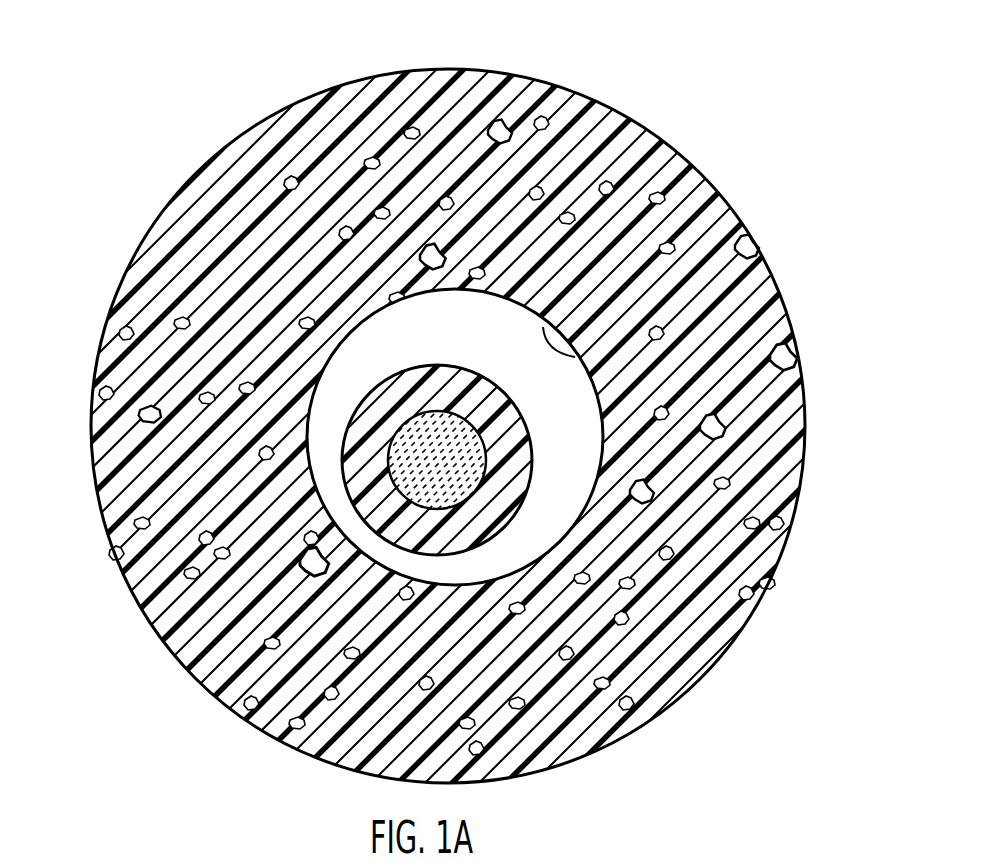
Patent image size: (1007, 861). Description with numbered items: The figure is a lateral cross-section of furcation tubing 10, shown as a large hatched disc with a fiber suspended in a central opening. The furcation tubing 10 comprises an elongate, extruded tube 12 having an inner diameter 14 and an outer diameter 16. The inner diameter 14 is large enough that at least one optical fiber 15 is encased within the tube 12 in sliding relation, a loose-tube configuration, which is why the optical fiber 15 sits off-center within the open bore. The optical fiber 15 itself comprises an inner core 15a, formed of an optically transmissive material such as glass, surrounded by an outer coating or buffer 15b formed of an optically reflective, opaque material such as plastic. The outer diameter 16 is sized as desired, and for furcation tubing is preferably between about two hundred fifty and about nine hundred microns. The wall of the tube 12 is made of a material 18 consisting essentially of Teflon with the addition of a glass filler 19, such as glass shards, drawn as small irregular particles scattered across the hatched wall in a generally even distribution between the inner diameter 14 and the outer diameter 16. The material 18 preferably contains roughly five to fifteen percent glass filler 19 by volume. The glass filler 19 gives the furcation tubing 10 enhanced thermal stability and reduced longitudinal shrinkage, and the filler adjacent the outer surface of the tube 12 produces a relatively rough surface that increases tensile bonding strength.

The furcation tubing 10 is at (503, 430).
The tube 12 is at (134, 252).
The inner diameter 14 is at (577, 358).
The optical fiber 15 is at (503, 430).
The inner core 15a is at (460, 478).
The outer coating or buffer 15b is at (387, 510).
The outer diameter 16 is at (316, 98).
The material 18 is at (673, 457).
The glass filler 19 is at (123, 417).